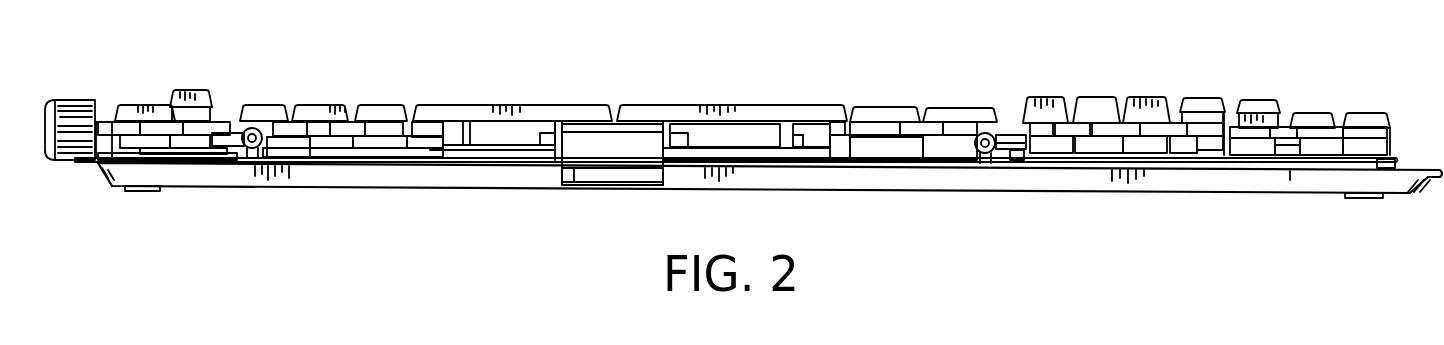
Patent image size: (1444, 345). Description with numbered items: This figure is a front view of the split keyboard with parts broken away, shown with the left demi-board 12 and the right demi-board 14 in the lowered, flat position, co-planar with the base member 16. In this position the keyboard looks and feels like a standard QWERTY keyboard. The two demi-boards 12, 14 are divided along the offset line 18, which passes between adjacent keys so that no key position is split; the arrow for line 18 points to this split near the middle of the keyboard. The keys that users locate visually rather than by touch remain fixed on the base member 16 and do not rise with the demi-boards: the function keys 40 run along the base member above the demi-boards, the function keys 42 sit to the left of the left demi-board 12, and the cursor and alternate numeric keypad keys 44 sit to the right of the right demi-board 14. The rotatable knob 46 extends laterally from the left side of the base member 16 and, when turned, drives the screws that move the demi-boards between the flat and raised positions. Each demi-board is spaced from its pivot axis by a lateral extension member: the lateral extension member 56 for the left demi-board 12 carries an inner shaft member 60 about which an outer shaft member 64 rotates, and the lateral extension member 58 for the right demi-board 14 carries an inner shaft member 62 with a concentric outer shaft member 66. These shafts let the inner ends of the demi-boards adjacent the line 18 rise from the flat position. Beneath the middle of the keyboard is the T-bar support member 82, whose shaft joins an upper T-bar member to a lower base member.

The left demi-board 12 is at (445, 113).
The right demi-board 14 is at (753, 113).
The base member 16 is at (687, 180).
The line 18 is at (613, 112).
The function keys 40 is at (1155, 85).
The function keys 42 is at (186, 82).
The keys 44 is at (1308, 90).
The rotatable knob 46 is at (75, 100).
The lateral extension member 56 is at (246, 130).
The lateral extension member 58 is at (993, 131).
The inner shaft member 60 is at (246, 150).
The inner shaft member 62 is at (982, 152).
The outer shaft member 64 is at (256, 150).
The outer shaft member 66 is at (991, 152).
The T-bar support member 82 is at (610, 153).